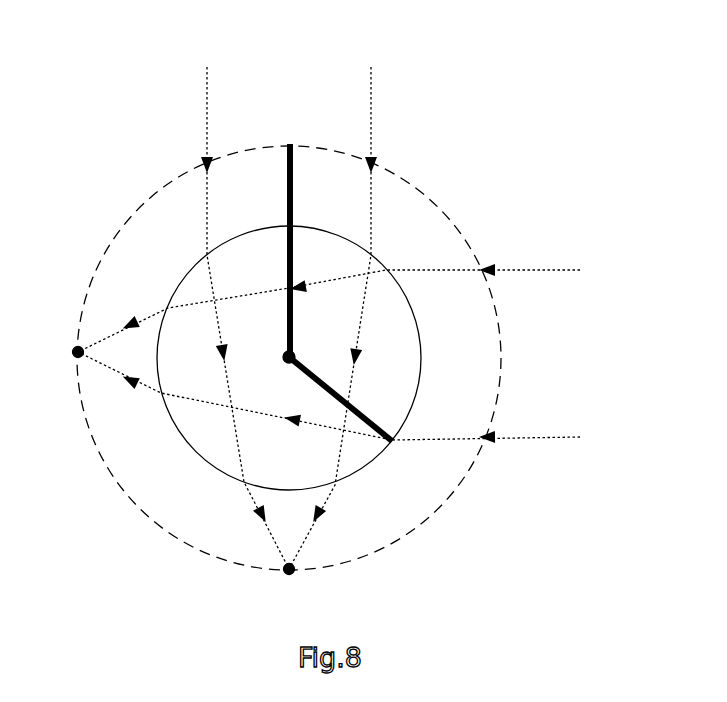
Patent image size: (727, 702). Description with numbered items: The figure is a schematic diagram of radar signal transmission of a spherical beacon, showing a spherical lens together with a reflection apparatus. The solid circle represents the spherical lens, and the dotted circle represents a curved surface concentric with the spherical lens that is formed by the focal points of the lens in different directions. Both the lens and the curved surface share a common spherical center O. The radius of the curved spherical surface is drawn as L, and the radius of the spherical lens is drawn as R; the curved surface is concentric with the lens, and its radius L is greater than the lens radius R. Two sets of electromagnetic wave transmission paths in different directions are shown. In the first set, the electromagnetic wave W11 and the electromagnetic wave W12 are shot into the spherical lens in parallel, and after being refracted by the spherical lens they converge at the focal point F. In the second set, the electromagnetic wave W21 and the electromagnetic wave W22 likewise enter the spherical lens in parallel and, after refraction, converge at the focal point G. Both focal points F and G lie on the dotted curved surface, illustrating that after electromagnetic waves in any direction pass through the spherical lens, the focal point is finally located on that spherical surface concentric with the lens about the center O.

The electromagnetic wave W11 is at (238, 302).
The electromagnetic wave W12 is at (343, 302).
The electromagnetic wave W21 is at (360, 306).
The electromagnetic wave W22 is at (360, 401).
The focal point G is at (63, 358).
The spherical center O is at (284, 374).
The focal point F is at (288, 586).
The radius of the spherical surface L is at (302, 250).
The radius of the spherical lens R is at (340, 399).